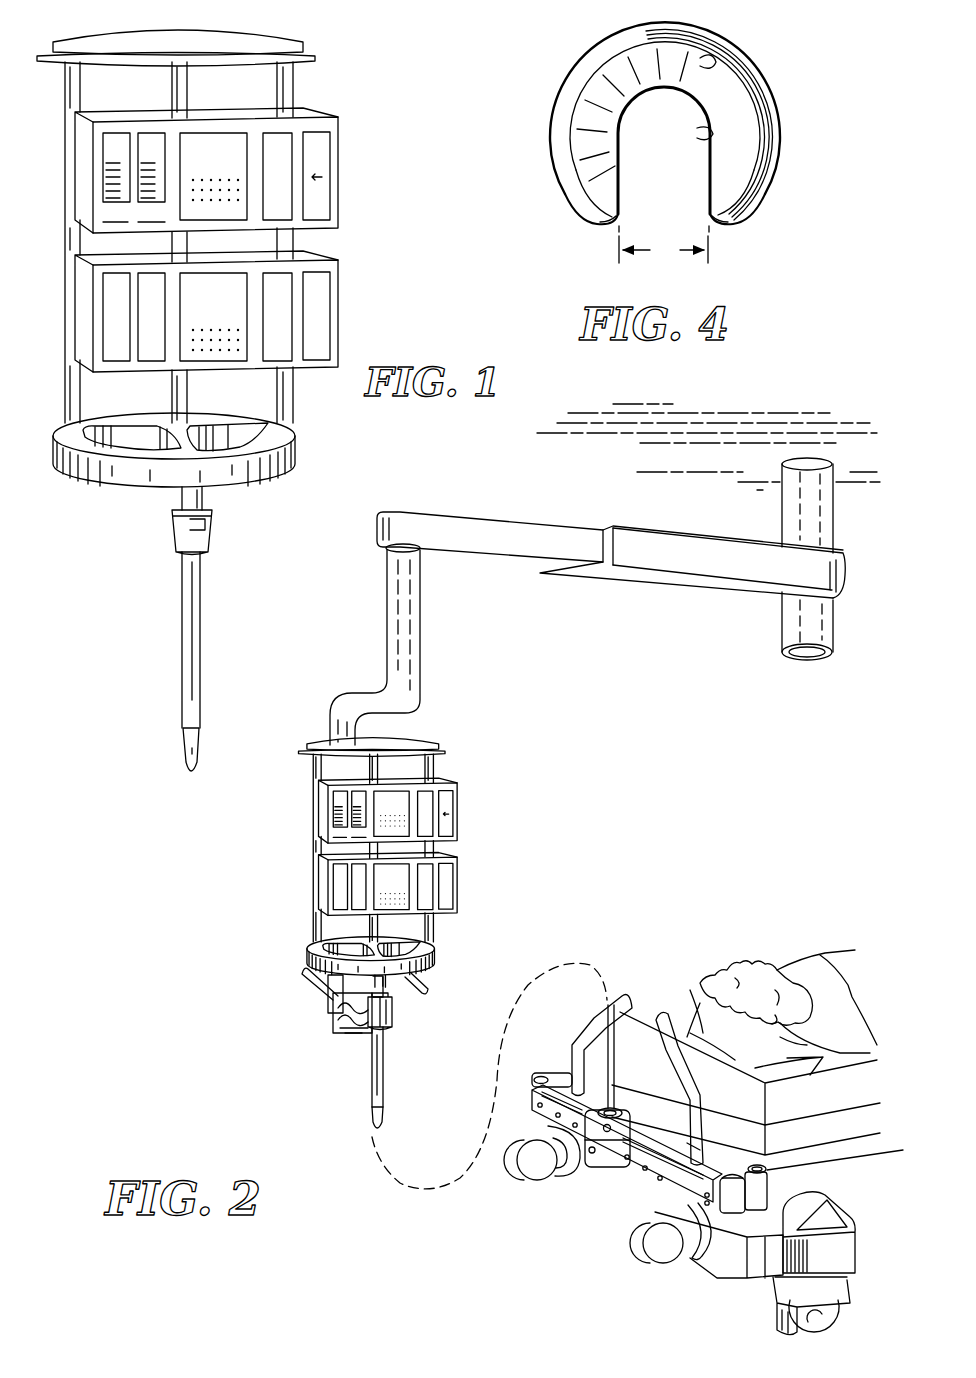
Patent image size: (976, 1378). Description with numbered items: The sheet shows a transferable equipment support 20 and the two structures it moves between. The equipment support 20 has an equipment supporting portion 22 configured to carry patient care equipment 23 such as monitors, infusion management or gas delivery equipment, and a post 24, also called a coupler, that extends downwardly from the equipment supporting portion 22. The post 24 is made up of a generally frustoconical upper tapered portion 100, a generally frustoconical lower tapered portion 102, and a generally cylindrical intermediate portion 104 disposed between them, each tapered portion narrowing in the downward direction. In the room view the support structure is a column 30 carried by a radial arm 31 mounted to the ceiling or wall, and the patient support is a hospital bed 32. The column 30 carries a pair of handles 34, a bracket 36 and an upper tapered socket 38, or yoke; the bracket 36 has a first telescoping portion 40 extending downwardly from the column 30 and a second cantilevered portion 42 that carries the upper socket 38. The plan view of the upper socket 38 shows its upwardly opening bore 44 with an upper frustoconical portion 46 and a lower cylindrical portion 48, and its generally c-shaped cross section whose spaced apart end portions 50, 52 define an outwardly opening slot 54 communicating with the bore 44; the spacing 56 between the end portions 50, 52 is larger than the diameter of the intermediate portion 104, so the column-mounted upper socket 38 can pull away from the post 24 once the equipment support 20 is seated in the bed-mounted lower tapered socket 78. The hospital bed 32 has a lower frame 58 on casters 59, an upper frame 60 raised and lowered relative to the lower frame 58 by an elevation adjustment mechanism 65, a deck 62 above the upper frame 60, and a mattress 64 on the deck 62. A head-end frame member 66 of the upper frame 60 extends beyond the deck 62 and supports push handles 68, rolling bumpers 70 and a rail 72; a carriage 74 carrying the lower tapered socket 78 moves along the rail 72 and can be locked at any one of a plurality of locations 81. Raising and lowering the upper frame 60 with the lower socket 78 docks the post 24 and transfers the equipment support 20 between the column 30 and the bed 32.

In FIG. 1, the equipment support 20 is at (345, 72).
In FIG. 2, the equipment support 20 is at (458, 778).
In FIG. 1, the equipment supporting portion 22 is at (344, 166).
In FIG. 2, the equipment supporting portion 22 is at (300, 878).
In FIG. 1, the patient care equipment 23 is at (333, 200).
In FIG. 2, the patient care equipment 23 is at (320, 812).
In FIG. 1, the post 24 is at (214, 646).
In FIG. 2, the post 24 is at (391, 1104).
In FIG. 2, the column 30 is at (447, 650).
In FIG. 2, the radial arm 31 is at (623, 577).
In FIG. 2, the hospital bed 32 is at (758, 958).
In FIG. 2, the handles 34 is at (430, 977).
In FIG. 2, the bracket 36 is at (318, 1044).
In FIG. 4, the upper tapered socket 38 is at (553, 80).
In FIG. 2, the upper tapered socket 38 is at (396, 1036).
In FIG. 2, the first telescoping portion 40 is at (330, 1028).
In FIG. 2, the second cantilevered portion 42 is at (350, 1037).
In FIG. 4, the bore 44 is at (680, 120).
In FIG. 4, the upper frustoconical portion 46 is at (717, 73).
In FIG. 4, the lower cylindrical portion 48 is at (717, 146).
In FIG. 4, the end portion 50 is at (617, 221).
In FIG. 4, the end portion 52 is at (708, 224).
In FIG. 4, the slot 54 is at (612, 241).
In FIG. 4, the spacing 56 is at (663, 250).
In FIG. 2, the lower frame 58 is at (732, 1248).
In FIG. 2, the casters 59 is at (832, 1320).
In FIG. 2, the upper frame 60 is at (855, 1193).
In FIG. 2, the deck 62 is at (847, 1124).
In FIG. 2, the mattress 64 is at (840, 1090).
In FIG. 2, the elevation adjustment mechanism 65 is at (856, 1258).
In FIG. 2, the head-end frame member 66 is at (737, 1170).
In FIG. 2, the push handles 68 is at (680, 1012).
In FIG. 2, the rolling bumpers 70 is at (515, 1178).
In FIG. 2, the rail 72 is at (588, 1177).
In FIG. 2, the carriage 74 is at (593, 1168).
In FIG. 2, the lower tapered socket 78 is at (615, 1110).
In FIG. 2, the locations 81 is at (673, 1178).
In FIG. 1, the upper tapered portion 100 is at (176, 538).
In FIG. 1, the lower tapered portion 102 is at (185, 757).
In FIG. 2, the lower tapered portion 102 is at (370, 1121).
In FIG. 1, the intermediate portion 104 is at (183, 642).